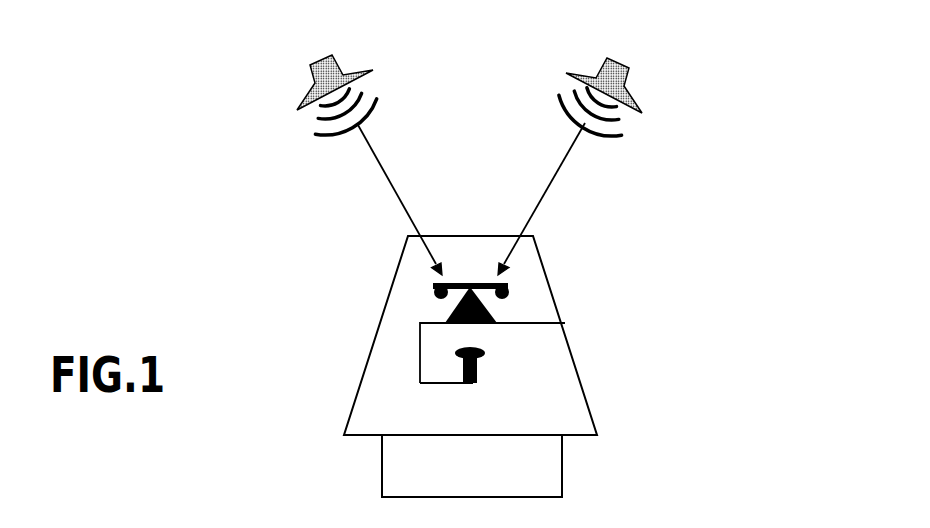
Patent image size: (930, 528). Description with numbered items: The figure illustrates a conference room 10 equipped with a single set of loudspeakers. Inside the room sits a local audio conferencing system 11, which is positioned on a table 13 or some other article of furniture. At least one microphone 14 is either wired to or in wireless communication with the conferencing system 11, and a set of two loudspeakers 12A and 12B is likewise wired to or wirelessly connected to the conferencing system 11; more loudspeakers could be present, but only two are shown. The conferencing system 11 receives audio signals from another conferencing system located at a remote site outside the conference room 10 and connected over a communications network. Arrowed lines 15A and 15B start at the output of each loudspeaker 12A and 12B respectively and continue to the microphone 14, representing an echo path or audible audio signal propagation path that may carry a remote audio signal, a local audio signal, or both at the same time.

The conference room 10 is at (758, 139).
The local audio conferencing system 11 is at (565, 323).
The loudspeaker 12A is at (310, 85).
The loudspeaker 12B is at (632, 108).
The table 13 is at (488, 472).
The microphone 14 is at (473, 383).
The arrowed line 15A is at (382, 162).
The arrowed line 15B is at (558, 172).